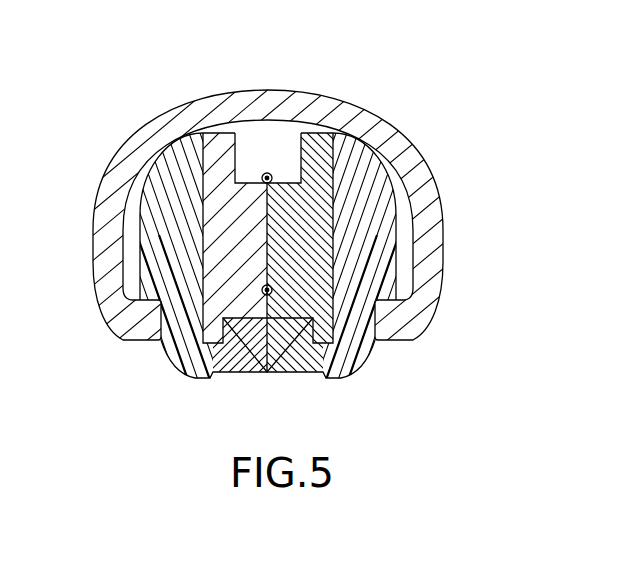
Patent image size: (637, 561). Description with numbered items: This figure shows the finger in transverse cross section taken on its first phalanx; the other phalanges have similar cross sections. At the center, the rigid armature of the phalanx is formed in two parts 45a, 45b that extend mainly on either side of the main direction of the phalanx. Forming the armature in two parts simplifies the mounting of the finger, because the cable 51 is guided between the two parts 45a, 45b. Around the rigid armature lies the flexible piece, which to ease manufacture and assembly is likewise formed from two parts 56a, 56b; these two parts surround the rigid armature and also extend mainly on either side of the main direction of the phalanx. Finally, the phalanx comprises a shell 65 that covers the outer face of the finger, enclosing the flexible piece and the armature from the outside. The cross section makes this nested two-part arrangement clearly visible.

The shell 65 is at (268, 104).
The first part of rigid armature 45a is at (240, 213).
The second part of rigid armature 45b is at (313, 158).
The cable 51 is at (272, 289).
The first part of flexible piece 56a is at (187, 347).
The second part of flexible piece 56b is at (350, 347).